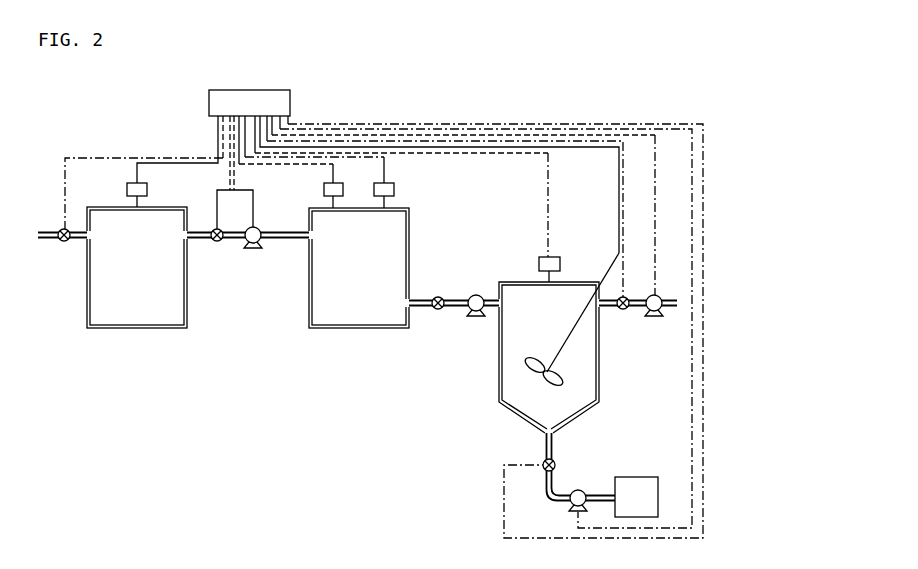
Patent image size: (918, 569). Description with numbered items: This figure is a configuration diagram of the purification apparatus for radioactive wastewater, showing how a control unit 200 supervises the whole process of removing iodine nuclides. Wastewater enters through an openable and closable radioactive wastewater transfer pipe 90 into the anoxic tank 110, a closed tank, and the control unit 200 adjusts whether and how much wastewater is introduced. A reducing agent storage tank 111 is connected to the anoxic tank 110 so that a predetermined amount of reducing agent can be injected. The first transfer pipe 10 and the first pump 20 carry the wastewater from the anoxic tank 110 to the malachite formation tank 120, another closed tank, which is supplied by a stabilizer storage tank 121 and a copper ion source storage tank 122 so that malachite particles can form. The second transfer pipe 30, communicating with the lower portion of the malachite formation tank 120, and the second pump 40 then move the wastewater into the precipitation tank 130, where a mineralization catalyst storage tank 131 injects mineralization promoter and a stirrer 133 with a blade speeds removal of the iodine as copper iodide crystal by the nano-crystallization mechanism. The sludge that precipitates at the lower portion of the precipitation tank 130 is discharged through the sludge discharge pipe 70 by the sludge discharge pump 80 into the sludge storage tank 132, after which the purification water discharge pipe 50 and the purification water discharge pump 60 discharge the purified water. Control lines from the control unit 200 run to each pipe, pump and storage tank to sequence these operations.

The control unit 200 is at (209, 98).
The anoxic tank 110 is at (87, 297).
The malachite formation tank 120 is at (409, 242).
The precipitation tank 130 is at (599, 380).
The reducing agent storage tank 111 is at (127, 188).
The stabilizer storage tank 121 is at (324, 190).
The copper ion source storage tank 122 is at (394, 188).
The mineralization catalyst storage tank 131 is at (557, 257).
The sludge storage tank 132 is at (614, 477).
The stirrer 133 is at (600, 278).
The radioactive wastewater transfer pipe 90 is at (46, 241).
The first transfer pipe 10 is at (203, 241).
The first pump 20 is at (253, 249).
The second transfer pipe 30 is at (417, 309).
The second pump 40 is at (475, 317).
The purification water discharge pipe 50 is at (607, 309).
The purification water discharge pump 60 is at (653, 317).
The sludge discharge pipe 70 is at (547, 491).
The sludge discharge pump 80 is at (576, 490).